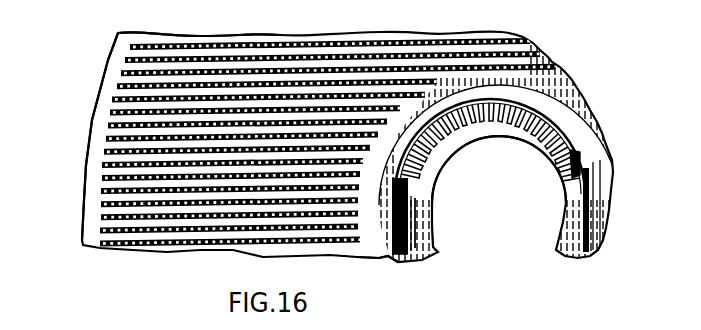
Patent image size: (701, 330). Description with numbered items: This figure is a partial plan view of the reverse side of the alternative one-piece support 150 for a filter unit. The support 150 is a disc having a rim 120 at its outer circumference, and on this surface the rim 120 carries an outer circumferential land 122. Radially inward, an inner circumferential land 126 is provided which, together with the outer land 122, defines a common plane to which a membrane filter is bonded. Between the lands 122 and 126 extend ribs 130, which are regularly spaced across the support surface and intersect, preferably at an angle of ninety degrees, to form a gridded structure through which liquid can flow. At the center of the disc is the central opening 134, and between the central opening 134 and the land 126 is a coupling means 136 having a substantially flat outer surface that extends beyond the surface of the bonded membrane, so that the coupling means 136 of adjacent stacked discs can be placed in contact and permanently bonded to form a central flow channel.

The rim 120 is at (84, 192).
The outer circumferential land 122 is at (94, 113).
The inner circumferential land 126 is at (379, 258).
The ribs 130 is at (250, 62).
The central opening 134 is at (488, 194).
The coupling means 136 is at (429, 231).
The one-piece support 150 is at (596, 78).